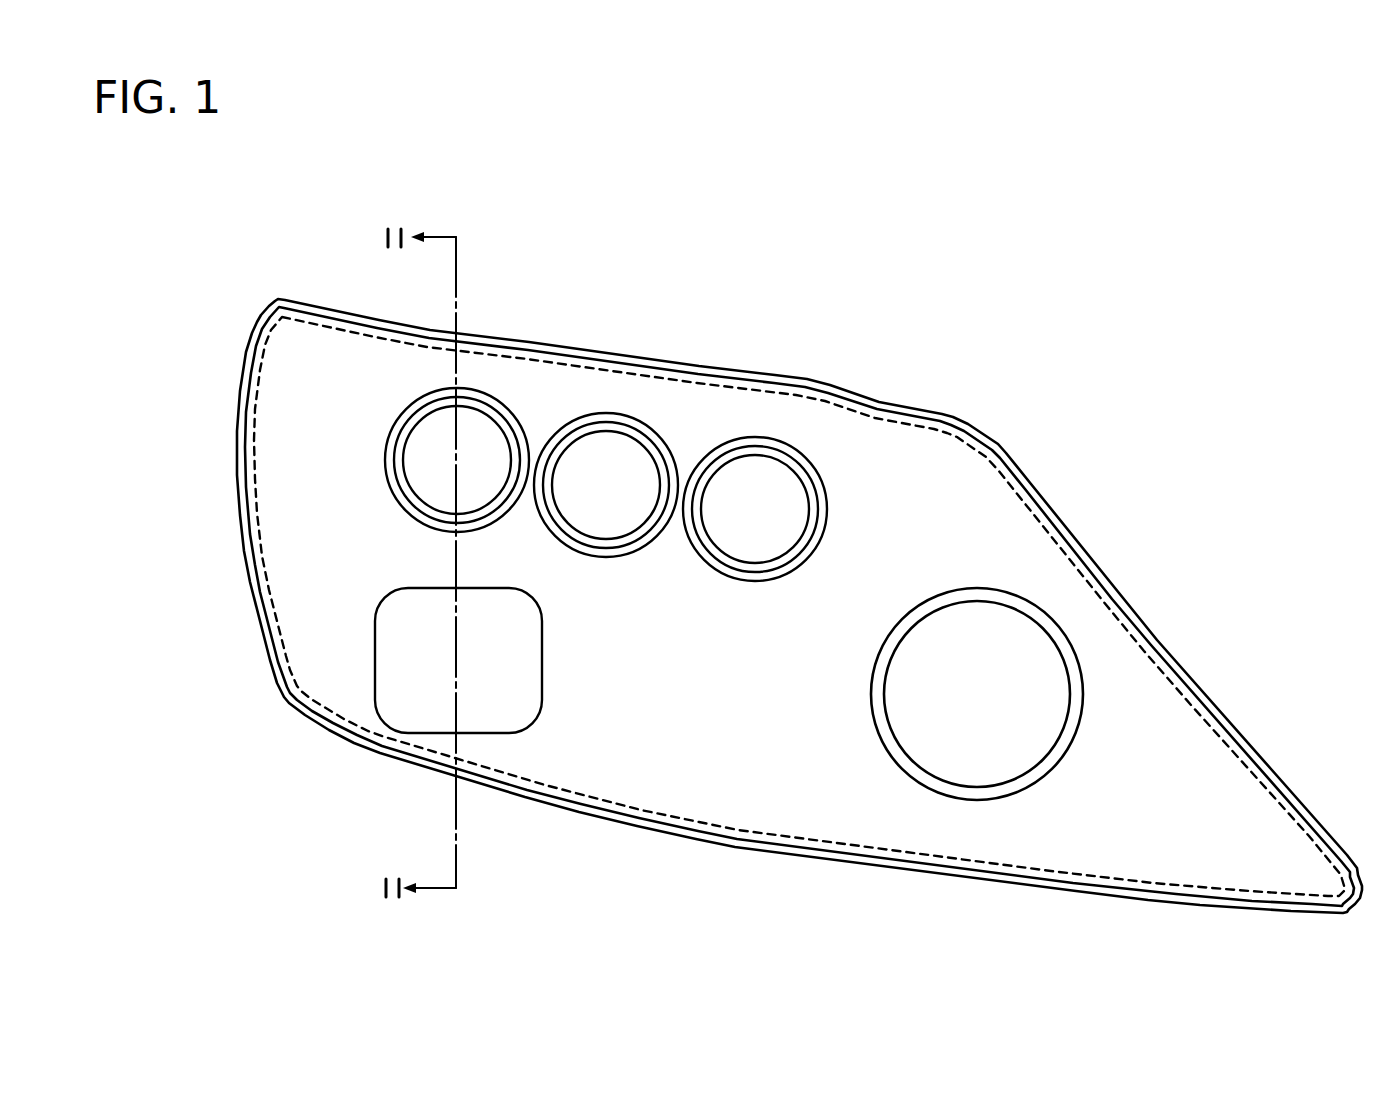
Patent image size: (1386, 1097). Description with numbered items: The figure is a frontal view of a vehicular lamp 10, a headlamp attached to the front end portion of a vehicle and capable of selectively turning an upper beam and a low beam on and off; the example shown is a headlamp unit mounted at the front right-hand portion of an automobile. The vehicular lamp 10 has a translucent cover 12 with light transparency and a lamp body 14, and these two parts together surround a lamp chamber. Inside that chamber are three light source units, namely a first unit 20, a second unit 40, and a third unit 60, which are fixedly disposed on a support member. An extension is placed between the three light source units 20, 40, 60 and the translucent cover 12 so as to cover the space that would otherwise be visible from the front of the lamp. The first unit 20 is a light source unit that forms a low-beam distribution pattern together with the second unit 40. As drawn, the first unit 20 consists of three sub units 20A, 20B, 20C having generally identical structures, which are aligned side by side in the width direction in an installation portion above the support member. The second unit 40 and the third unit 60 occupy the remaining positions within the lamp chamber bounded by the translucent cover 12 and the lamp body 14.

The vehicular lamp 10 is at (1038, 421).
The translucent cover 12 is at (1193, 697).
The lamp body 14 is at (710, 842).
The first unit 20 is at (793, 308).
The sub unit 20A is at (761, 470).
The sub unit 20B is at (622, 452).
The sub unit 20C is at (490, 440).
The second unit 40 is at (388, 669).
The third unit 60 is at (1038, 642).